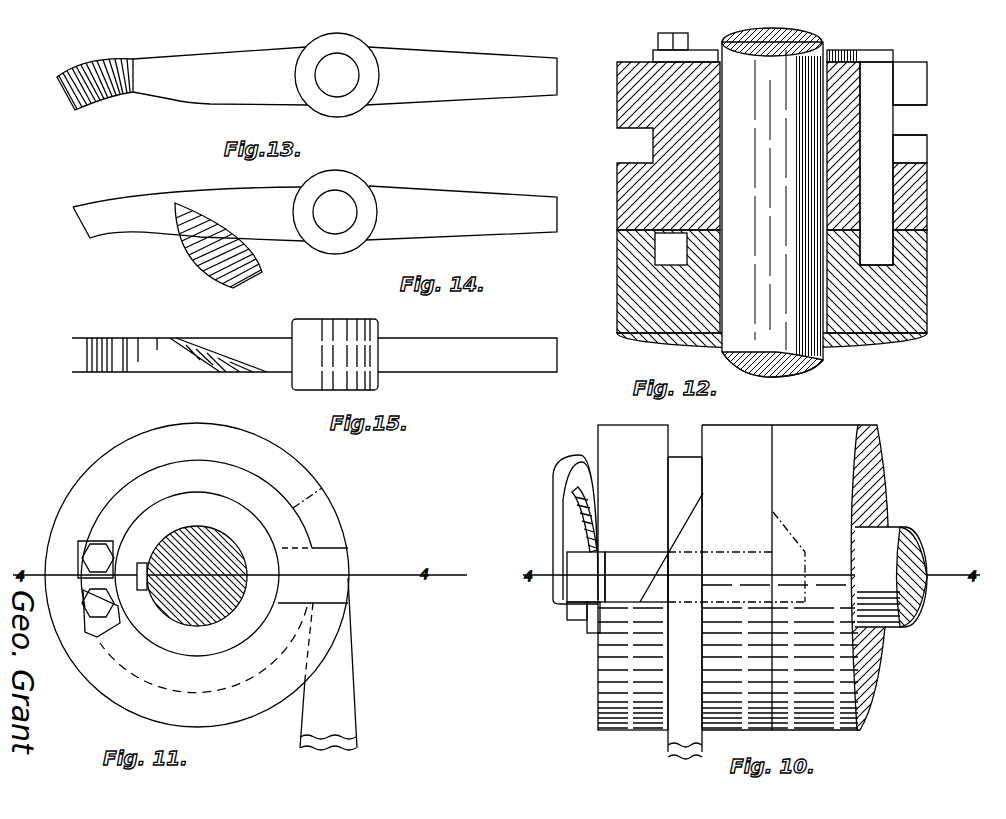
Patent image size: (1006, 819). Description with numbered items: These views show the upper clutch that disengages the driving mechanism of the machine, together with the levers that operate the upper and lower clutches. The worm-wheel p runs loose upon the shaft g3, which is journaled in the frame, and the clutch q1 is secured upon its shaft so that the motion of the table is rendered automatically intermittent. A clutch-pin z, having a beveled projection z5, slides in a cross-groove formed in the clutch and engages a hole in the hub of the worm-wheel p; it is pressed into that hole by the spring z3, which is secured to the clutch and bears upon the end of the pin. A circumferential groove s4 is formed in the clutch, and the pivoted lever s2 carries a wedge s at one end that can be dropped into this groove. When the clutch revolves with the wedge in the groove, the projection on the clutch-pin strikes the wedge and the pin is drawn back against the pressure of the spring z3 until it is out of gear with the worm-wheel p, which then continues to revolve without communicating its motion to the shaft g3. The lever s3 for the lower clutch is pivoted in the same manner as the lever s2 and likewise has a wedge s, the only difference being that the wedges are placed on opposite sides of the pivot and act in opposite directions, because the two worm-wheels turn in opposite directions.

In FIG. 13, the wedge s is at (102, 93).
In FIG. 14, the wedge s is at (200, 257).
In FIG. 11, the wedge s is at (328, 664).
In FIG. 10, the wedge s is at (671, 608).
In FIG. 13, the pivoted lever s2 is at (345, 75).
In FIG. 14, the lever s3 is at (315, 212).
In FIG. 15, the lever s3 is at (314, 354).
In FIG. 12, the circumferential groove s4 is at (670, 94).
In FIG. 12, the clutch q1 is at (668, 146).
In FIG. 11, the shaft g3 is at (192, 576).
In FIG. 12, the shaft g3 is at (772, 202).
In FIG. 10, the shaft g3 is at (891, 577).
In FIG. 12, the clutch-pin z is at (877, 163).
In FIG. 10, the clutch-pin z is at (586, 592).
In FIG. 11, the spring z3 is at (197, 575).
In FIG. 12, the spring z3 is at (843, 50).
In FIG. 10, the spring z3 is at (562, 529).
In FIG. 11, the beveled projection z5 is at (313, 575).
In FIG. 12, the beveled projection z5 is at (920, 118).
In FIG. 10, the beveled projection z5 is at (636, 577).
In FIG. 12, the worm-wheel p is at (772, 289).
In FIG. 10, the worm-wheel p is at (743, 577).